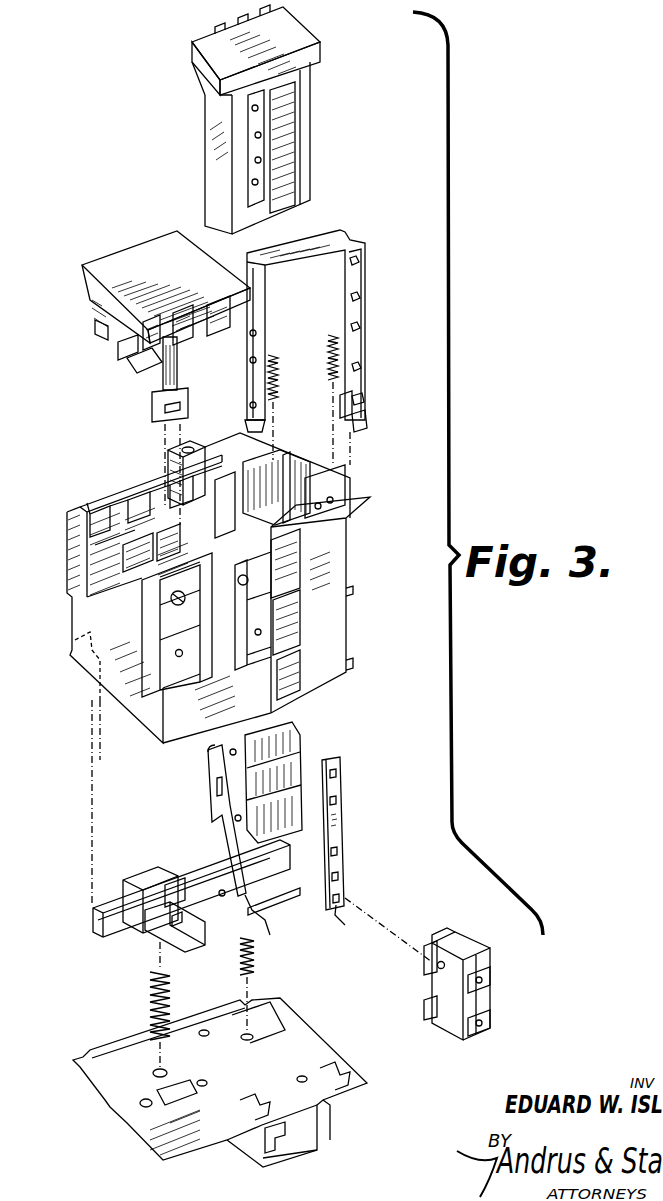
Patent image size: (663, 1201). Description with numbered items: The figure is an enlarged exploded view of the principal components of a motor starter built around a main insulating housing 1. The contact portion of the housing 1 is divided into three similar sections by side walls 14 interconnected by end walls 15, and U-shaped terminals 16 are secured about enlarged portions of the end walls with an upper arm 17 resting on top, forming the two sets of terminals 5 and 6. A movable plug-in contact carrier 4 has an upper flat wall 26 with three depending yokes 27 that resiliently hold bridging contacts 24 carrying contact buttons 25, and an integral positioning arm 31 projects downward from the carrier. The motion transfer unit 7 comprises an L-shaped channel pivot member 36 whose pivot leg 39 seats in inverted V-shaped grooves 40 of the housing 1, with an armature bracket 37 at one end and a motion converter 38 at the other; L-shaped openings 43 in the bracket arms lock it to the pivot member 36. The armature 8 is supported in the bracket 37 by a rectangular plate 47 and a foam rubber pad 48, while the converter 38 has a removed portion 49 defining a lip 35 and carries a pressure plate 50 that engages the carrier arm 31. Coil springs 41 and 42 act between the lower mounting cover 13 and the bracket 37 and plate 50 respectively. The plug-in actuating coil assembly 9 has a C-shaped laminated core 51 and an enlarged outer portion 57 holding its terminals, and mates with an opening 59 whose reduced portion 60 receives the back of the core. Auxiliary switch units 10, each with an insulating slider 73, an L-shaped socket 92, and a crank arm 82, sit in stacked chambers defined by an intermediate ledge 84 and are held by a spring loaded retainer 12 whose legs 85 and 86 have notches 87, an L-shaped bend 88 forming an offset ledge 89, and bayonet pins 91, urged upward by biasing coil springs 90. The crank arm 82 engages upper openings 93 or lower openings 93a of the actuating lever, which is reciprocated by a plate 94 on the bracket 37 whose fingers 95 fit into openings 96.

The main insulating housing 1 is at (72, 628).
The movable plug-in contact carrier 4 is at (164, 276).
The terminals 5 is at (125, 500).
The terminals 6 is at (165, 600).
The motion transfer unit 7 is at (164, 878).
The armature 8 is at (266, 748).
The plug-in actuating coil assembly 9 is at (203, 112).
The plug-in auxiliary switch units 10 is at (497, 994).
The spring loaded retainer 12 is at (368, 290).
The lower mounting cover 13 is at (116, 1090).
The side walls 14 is at (162, 542).
The end walls 15 is at (165, 575).
The U-shaped terminals 16 is at (177, 640).
The upper arm 17 is at (184, 604).
The bridging contact 24 is at (96, 317).
The contact buttons 25 is at (140, 370).
The upper flat wall 26 is at (118, 268).
The yokes 27 is at (116, 343).
The positioning arm 31 is at (158, 392).
The lip 35 is at (184, 918).
The L-shaped channel pivot member 36 is at (94, 922).
The armature bracket 37 is at (215, 812).
The motion converter 38 is at (142, 878).
The pivot leg 39 is at (108, 895).
The inverted V-shaped grooves 40 is at (75, 655).
The coil spring 41 is at (238, 966).
The coil spring 42 is at (148, 996).
The L-shaped opening 43 is at (221, 888).
The rectangular plate 47 is at (215, 781).
The foam rubber pad 48 is at (210, 750).
The removed portion 49 is at (170, 892).
The pressure plate 50 is at (152, 935).
The C-shaped laminated core 51 is at (252, 130).
The enlarged outer portion 57 is at (205, 62).
The opening 59 is at (312, 470).
The reduced portion 60 is at (340, 490).
The slider 73 is at (482, 1002).
The crank arm 82 is at (435, 968).
The intermediate ledge 84 is at (355, 592).
The leg 85 is at (249, 346).
The leg 86 is at (366, 345).
The notches 87 is at (368, 420).
The L-shaped bend 88 is at (338, 406).
The offset ledge 89 is at (356, 400).
The biasing coil springs 90 is at (328, 350).
The bayonet pins 91 is at (350, 297).
The L-shaped socket 92 is at (428, 956).
The upper openings 93 is at (338, 794).
The lower openings 93a is at (340, 878).
The plate 94 is at (285, 908).
The fingers 95 is at (272, 936).
The openings 96 is at (341, 896).